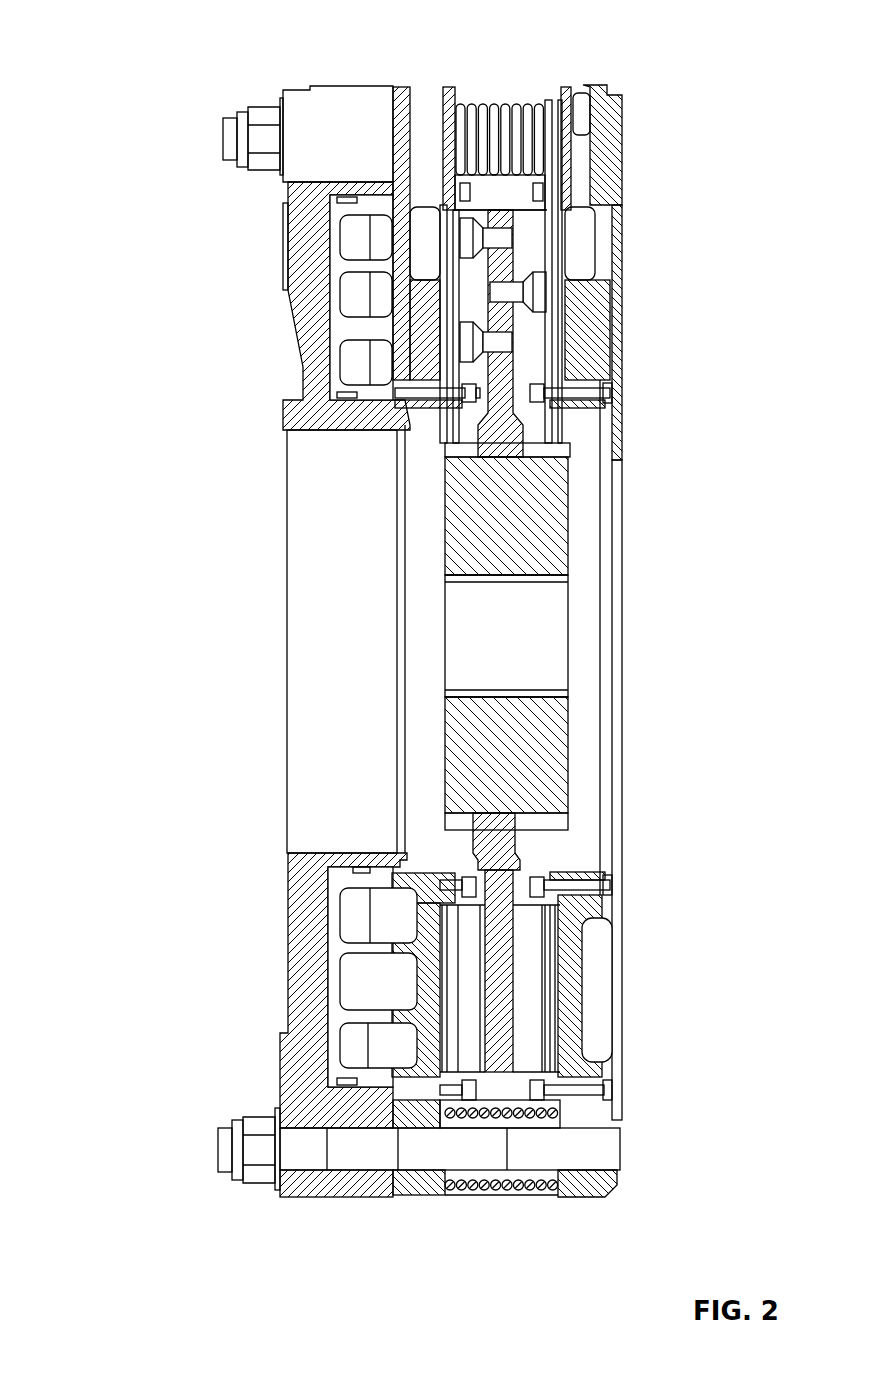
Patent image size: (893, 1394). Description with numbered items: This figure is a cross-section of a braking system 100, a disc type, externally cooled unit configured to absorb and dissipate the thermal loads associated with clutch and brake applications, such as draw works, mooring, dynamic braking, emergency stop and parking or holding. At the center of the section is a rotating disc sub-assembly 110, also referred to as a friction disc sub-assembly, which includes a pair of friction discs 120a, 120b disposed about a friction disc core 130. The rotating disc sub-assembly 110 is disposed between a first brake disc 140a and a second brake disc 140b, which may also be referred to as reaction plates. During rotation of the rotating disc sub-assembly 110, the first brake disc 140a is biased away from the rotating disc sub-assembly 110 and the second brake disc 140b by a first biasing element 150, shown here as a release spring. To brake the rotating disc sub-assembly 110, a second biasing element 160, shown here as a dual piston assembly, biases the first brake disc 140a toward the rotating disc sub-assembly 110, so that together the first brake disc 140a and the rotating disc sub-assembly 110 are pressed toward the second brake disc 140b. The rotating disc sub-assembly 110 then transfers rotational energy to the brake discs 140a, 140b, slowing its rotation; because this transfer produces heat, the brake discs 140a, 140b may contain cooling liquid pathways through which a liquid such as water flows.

The braking system 100 is at (164, 30).
The rotating disc sub-assembly 110 is at (496, 1085).
The friction disc 120a is at (473, 1045).
The friction disc 120b is at (528, 995).
The friction disc core 130 is at (503, 946).
The first brake disc 140a is at (400, 88).
The second brake disc 140b is at (612, 85).
The first biasing element 150 is at (485, 103).
The second biasing element 160 is at (310, 235).